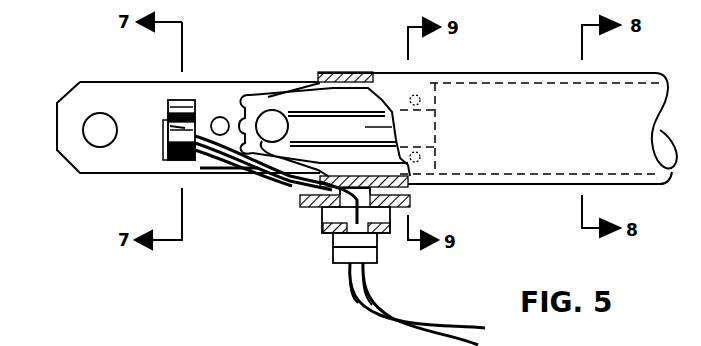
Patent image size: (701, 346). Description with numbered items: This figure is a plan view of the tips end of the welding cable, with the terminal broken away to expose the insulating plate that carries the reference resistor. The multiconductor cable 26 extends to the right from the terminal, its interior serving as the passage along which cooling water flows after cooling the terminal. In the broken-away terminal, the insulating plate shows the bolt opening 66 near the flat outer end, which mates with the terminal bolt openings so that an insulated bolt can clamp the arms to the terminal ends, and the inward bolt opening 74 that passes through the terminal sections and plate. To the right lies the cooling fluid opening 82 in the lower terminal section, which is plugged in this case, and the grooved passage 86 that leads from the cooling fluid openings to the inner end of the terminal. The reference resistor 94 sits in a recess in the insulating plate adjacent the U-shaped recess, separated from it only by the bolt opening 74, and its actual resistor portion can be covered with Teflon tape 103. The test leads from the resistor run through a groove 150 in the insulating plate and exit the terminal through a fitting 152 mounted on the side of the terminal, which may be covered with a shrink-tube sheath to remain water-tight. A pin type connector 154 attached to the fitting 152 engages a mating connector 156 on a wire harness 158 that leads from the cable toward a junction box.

The multiconductor cable 26 is at (494, 97).
The bolt opening 66 is at (97, 148).
The bolt opening 74 is at (221, 117).
The cooling fluid opening 82 is at (276, 132).
The grooved passage 86 is at (368, 127).
The reference resistor 94 is at (170, 128).
The Teflon tape 103 is at (166, 150).
The groove 150 is at (208, 148).
The fitting 152 is at (301, 206).
The pin type connector 154 is at (325, 233).
The mating connector 156 is at (340, 273).
The wire harness 158 is at (388, 312).